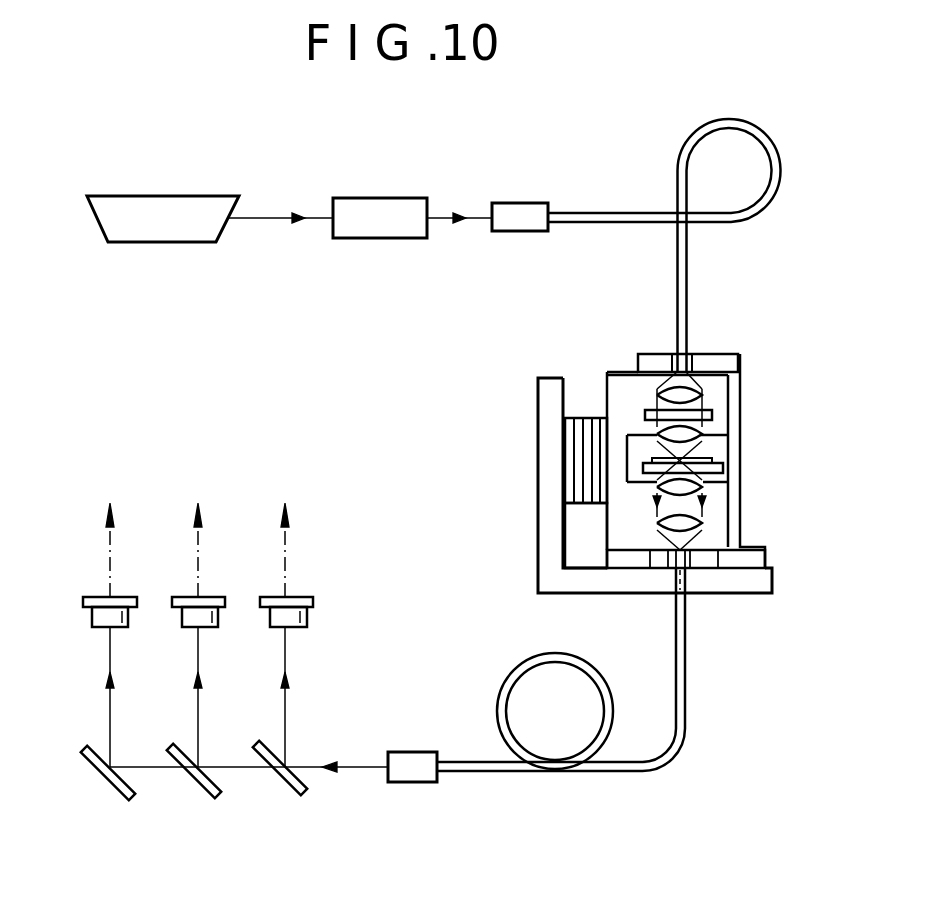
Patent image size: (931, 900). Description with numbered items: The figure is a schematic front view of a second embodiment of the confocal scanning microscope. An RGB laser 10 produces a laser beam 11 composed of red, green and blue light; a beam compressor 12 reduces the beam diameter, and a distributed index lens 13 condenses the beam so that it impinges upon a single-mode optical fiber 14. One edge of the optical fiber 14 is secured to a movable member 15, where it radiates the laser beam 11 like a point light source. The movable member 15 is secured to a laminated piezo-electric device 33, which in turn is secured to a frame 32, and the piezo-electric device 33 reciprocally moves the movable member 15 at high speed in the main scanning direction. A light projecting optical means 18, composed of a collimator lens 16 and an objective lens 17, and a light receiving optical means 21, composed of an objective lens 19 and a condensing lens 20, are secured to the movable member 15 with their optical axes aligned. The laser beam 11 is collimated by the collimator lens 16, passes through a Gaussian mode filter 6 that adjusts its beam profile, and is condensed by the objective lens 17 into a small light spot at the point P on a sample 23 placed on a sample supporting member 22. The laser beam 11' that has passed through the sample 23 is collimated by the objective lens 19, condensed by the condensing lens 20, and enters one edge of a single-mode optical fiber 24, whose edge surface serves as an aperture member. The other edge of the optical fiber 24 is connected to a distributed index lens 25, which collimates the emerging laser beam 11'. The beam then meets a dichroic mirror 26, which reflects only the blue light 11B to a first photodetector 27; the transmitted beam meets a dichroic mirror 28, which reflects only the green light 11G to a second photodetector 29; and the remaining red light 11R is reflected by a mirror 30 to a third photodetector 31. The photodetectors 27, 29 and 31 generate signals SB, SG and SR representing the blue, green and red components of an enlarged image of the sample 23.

The RGB laser 10 is at (187, 196).
The laser beam 11 is at (465, 315).
The beam compressor 12 is at (390, 198).
The distributed index lens 13 is at (533, 203).
The single-mode optical fiber 14 is at (640, 213).
The movable member 15 is at (630, 373).
The collimator lens 16 is at (708, 385).
The objective lens 17 is at (712, 418).
The light projecting optical means 18 is at (797, 335).
The sample 23 is at (707, 456).
The point P is at (665, 448).
The sample supporting member 22 is at (656, 462).
The objective lens 19 is at (708, 485).
The condensing lens 20 is at (705, 522).
The light receiving optical means 21 is at (806, 457).
The frame 32 is at (537, 398).
The laminated piezo-electric device 33 is at (577, 438).
The Gaussian mode filter 6 is at (640, 413).
The laser beam 11' is at (408, 657).
The single-mode optical fiber 24 is at (688, 703).
The distributed index lens 25 is at (440, 784).
The dichroic mirror 26 is at (302, 794).
The dichroic mirror 28 is at (218, 797).
The mirror 30 is at (135, 802).
The red light 11R is at (110, 707).
The green light 11G is at (198, 717).
The blue light 11B is at (285, 707).
The third photodetector 31 is at (93, 620).
The second photodetector 29 is at (218, 620).
The first photodetector 27 is at (307, 618).
The signal SR is at (115, 534).
The signal SG is at (203, 534).
The signal SB is at (290, 534).